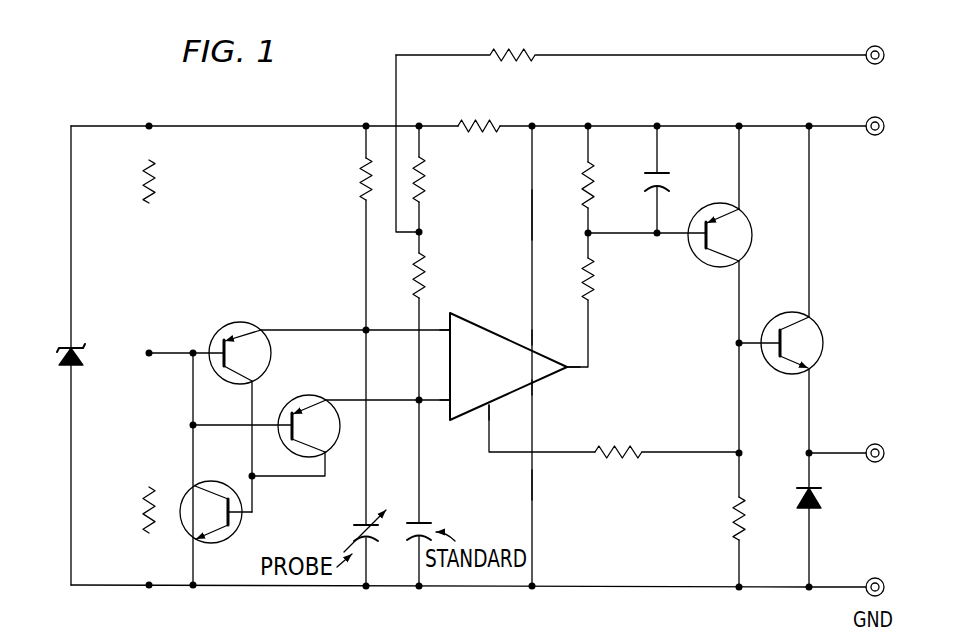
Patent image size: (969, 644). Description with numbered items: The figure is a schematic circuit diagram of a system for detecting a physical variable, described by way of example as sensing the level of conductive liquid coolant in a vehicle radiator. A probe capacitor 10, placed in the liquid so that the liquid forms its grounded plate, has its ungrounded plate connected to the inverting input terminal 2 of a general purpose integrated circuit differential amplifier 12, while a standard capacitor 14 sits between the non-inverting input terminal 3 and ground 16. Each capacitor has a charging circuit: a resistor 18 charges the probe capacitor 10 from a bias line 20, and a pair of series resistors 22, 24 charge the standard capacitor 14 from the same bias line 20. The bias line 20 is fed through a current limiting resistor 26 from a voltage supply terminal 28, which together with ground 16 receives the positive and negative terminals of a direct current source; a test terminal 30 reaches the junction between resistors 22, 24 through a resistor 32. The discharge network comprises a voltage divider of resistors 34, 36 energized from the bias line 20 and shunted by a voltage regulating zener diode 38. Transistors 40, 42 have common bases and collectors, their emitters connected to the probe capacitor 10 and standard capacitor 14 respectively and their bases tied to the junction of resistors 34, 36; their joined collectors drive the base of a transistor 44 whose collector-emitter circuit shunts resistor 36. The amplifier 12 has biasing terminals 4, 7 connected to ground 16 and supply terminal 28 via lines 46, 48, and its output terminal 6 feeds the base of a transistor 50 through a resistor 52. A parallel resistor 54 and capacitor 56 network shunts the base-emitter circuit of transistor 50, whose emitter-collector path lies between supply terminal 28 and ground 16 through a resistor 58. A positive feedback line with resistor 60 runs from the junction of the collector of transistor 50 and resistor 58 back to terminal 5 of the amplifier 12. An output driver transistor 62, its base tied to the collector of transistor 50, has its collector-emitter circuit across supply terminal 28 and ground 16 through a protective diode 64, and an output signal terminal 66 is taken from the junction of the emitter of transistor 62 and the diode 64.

The probe capacitor 10 is at (359, 520).
The differential amplifier 12 is at (478, 332).
The standard capacitor 14 is at (424, 522).
The ground 16 is at (486, 588).
The resistor 18 is at (356, 180).
The bias line 20 is at (263, 126).
The series resistor 22 is at (430, 275).
The series resistor 24 is at (430, 182).
The current limiting resistor 26 is at (489, 122).
The voltage supply terminal 28 is at (883, 132).
The test terminal 30 is at (871, 66).
The resistor 32 is at (512, 58).
The resistor 34 is at (158, 181).
The resistor 36 is at (142, 511).
The zener diode 38 is at (66, 346).
The transistor 40 is at (240, 322).
The transistor 42 is at (300, 396).
The transistor 44 is at (242, 518).
The line 46 is at (532, 488).
The line 48 is at (532, 212).
The transistor 50 is at (745, 224).
The resistor 52 is at (595, 286).
The resistor 54 is at (597, 186).
The capacitor 56 is at (662, 175).
The resistor 58 is at (733, 518).
The resistor 60 is at (616, 448).
The output driver transistor 62 is at (815, 325).
The protective diode 64 is at (815, 498).
The output signal terminal 66 is at (878, 463).
The inverting input terminal 2 is at (440, 319).
The non-inverting input terminal 3 is at (440, 392).
The biasing terminal 4 is at (540, 395).
The terminal 5 is at (494, 420).
The output terminal 6 is at (572, 357).
The biasing terminal 7 is at (524, 332).